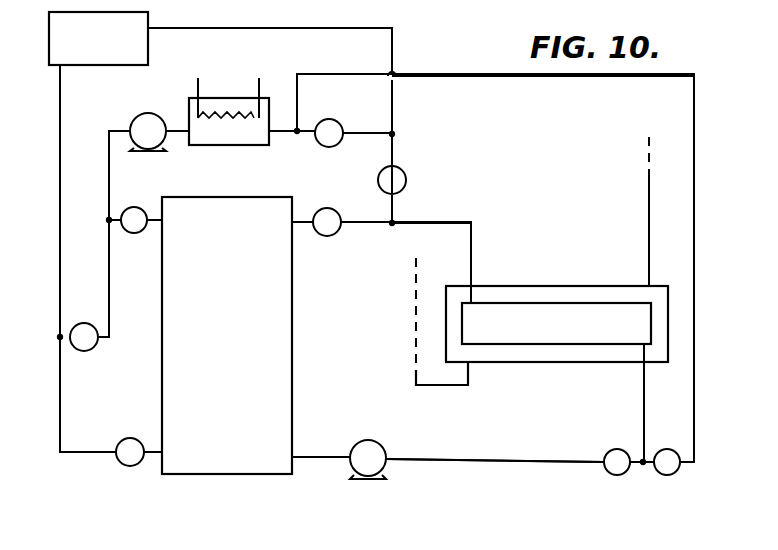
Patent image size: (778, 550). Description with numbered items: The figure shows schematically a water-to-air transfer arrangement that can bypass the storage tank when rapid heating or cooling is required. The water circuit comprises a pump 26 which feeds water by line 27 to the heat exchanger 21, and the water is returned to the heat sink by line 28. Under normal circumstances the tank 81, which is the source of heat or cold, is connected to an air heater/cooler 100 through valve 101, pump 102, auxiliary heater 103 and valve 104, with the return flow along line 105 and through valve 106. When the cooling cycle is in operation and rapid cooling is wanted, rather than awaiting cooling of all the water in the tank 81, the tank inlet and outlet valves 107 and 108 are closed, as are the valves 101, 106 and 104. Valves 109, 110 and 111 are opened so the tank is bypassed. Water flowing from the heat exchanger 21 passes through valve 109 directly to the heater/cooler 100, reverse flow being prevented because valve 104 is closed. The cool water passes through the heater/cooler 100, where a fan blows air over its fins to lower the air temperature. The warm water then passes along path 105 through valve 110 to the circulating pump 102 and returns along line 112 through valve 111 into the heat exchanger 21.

The air heater/cooler 100 is at (110, 52).
The tank 81 is at (236, 282).
The heat exchanger / reactor 21 is at (588, 335).
The pump 102 is at (148, 124).
The auxiliary heater 103 is at (225, 145).
The valve 104 is at (329, 147).
The valve 109 is at (398, 176).
The line 28 is at (418, 222).
The valve 108 is at (326, 236).
The line 112 is at (599, 80).
The valve 101 is at (134, 233).
The valve 110 is at (82, 351).
The line 105 is at (60, 416).
The valve 106 is at (131, 438).
The pump 26 is at (366, 452).
The line 27 is at (492, 460).
The valve 107 is at (612, 450).
The valve 111 is at (665, 449).